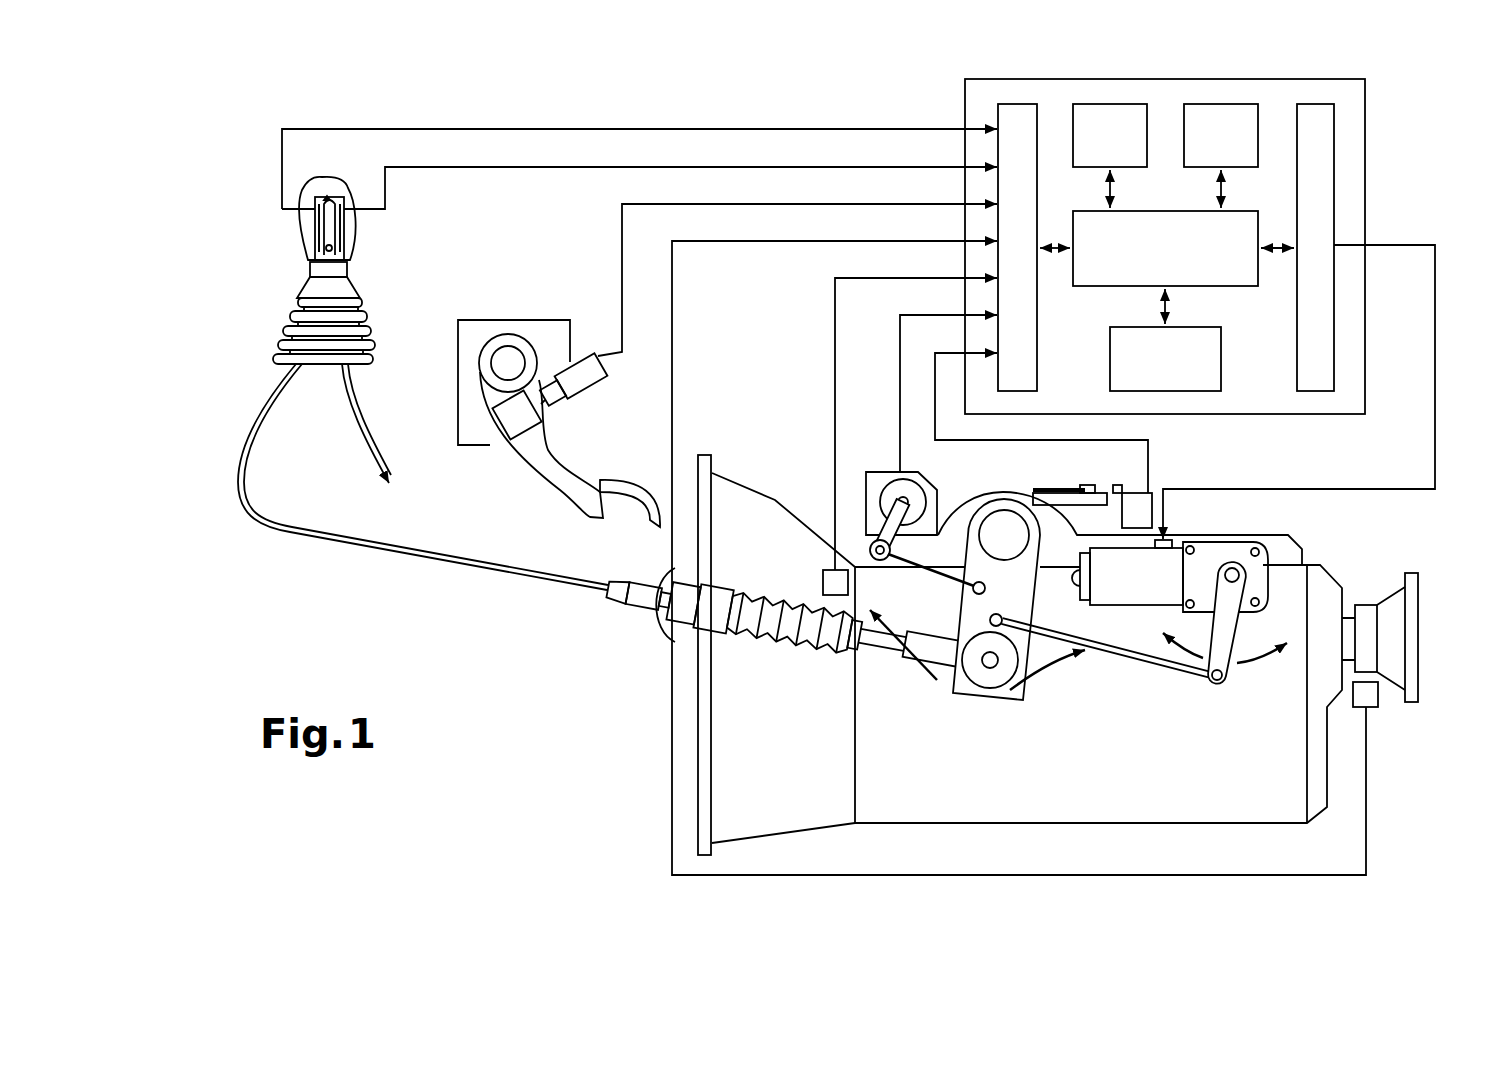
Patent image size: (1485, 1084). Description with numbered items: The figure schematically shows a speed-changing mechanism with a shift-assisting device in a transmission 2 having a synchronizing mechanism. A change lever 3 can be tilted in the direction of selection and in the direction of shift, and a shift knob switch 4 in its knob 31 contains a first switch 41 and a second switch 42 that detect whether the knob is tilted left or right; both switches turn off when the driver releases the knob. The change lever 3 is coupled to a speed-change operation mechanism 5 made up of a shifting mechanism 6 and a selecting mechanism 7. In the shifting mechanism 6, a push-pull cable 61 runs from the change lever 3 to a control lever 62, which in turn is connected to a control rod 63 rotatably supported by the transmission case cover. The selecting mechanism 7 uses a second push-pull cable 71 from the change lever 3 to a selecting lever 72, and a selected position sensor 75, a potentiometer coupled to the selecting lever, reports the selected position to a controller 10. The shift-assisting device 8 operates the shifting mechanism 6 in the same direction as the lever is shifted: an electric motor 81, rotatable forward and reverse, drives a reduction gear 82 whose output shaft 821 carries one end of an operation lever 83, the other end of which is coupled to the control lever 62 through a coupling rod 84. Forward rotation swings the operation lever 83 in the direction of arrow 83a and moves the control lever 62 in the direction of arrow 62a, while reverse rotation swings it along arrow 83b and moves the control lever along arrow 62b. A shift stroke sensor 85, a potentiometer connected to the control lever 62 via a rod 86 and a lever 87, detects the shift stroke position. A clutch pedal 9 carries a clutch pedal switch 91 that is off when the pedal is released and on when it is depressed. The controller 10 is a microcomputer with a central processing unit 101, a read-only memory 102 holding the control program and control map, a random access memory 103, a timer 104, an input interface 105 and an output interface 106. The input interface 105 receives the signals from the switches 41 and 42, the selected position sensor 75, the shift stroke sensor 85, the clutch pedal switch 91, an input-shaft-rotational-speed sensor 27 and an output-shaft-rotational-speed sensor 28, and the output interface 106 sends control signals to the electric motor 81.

The transmission 2 is at (1222, 822).
The change lever 3 is at (264, 289).
The shift knob switch 4 is at (336, 196).
The speed-change operation mechanism 5 is at (1025, 778).
The shifting mechanism 6 is at (962, 708).
The selecting mechanism 7 is at (1153, 445).
The shift-assisting device 8 is at (1309, 546).
The clutch pedal 9 is at (540, 502).
The controller 10 is at (962, 70).
The input-shaft-rotational-speed sensor 27 is at (827, 572).
The output-shaft-rotational-speed sensor 28 is at (1375, 708).
The knob 31 is at (301, 196).
The first switch 41 is at (318, 216).
The second switch 42 is at (344, 221).
The push-pull cable 61 is at (545, 588).
The control lever 62 is at (1000, 700).
The arrow 62a is at (928, 688).
The arrow 62b is at (1088, 690).
The control rod 63 is at (1002, 524).
The push-pull cable 71 is at (370, 453).
The selecting lever 72 is at (1070, 505).
The selected position sensor 75 is at (1151, 495).
The electric motor 81 is at (1105, 600).
The reduction gear 82 is at (1210, 547).
The output shaft 821 is at (1236, 569).
The operation lever 83 is at (1230, 683).
The arrow 83a is at (1156, 634).
The arrow 83b is at (1269, 637).
The coupling rod 84 is at (1145, 663).
The shift stroke sensor 85 is at (898, 478).
The rod 86 is at (935, 590).
The lever 87 is at (884, 524).
The clutch pedal switch 91 is at (576, 389).
The central processing unit 101 is at (1233, 287).
The read-only memory 102 is at (1092, 103).
The random access memory 103 is at (1217, 103).
The timer 104 is at (1109, 370).
The input interface 105 is at (997, 152).
The output interface 106 is at (1335, 150).